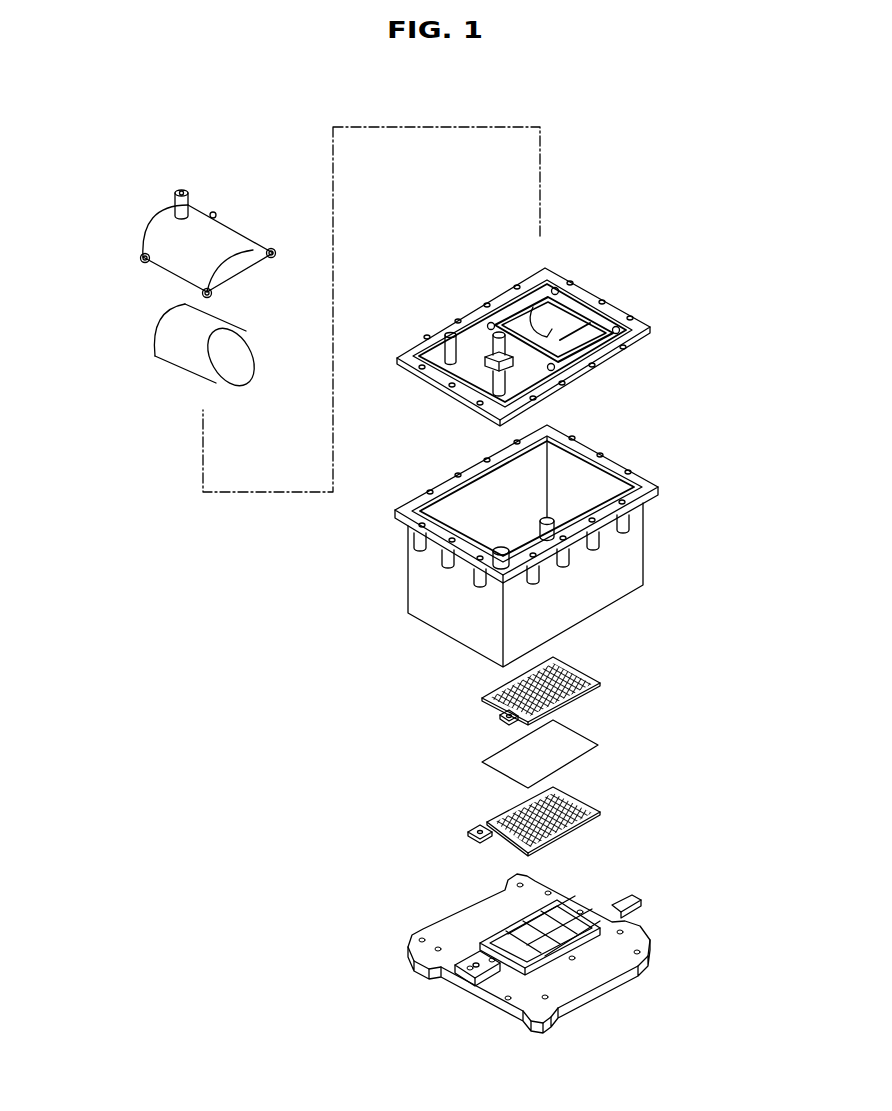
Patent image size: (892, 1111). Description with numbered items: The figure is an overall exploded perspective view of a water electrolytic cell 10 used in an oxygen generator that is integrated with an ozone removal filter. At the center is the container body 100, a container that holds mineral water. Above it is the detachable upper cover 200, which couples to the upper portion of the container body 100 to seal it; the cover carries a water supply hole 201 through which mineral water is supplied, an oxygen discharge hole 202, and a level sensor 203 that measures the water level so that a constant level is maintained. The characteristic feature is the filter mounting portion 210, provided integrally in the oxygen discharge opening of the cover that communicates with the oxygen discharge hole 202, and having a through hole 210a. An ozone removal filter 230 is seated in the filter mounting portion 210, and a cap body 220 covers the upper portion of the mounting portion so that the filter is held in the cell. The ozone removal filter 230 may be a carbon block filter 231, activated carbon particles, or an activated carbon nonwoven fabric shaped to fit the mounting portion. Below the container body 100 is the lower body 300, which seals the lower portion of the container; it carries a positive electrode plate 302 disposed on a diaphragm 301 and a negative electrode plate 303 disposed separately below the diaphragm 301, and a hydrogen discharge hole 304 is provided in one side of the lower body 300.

The water electrolytic cell 10 is at (772, 824).
The container body 100 is at (640, 566).
The detachable upper cover 200 is at (653, 336).
The water supply hole 201 is at (490, 385).
The oxygen discharge hole 202 is at (190, 193).
The level sensor 203 is at (447, 332).
The filter mounting portion 210 is at (527, 303).
The through hole 210a is at (588, 337).
The cap body 220 is at (227, 230).
The ozone removal filter 230 is at (140, 316).
The carbon block filter 231 is at (233, 333).
The lower body 300 is at (582, 890).
The diaphragm 301 is at (482, 762).
The positive electrode plate 302 is at (482, 698).
The negative electrode plate 303 is at (487, 822).
The hydrogen discharge hole 304 is at (640, 907).